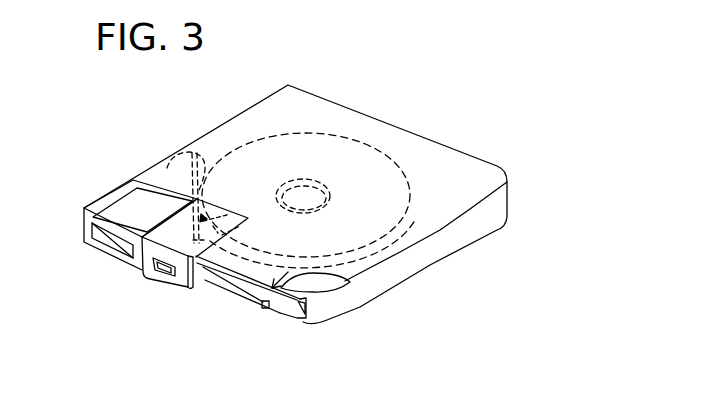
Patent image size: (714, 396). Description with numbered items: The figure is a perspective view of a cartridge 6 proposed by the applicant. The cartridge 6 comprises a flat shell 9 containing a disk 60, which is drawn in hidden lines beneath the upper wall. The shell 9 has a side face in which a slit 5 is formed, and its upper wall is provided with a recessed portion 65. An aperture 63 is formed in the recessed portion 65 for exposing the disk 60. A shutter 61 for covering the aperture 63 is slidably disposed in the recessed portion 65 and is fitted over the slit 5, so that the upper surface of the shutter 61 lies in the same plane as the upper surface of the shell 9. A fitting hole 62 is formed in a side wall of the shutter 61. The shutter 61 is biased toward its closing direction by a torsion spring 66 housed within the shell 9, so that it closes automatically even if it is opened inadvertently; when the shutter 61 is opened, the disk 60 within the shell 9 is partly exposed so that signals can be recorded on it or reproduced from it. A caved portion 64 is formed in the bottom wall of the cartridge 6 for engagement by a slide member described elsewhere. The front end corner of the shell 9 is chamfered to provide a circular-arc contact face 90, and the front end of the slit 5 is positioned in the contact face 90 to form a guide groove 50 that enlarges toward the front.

The cartridge 6 is at (490, 123).
The slit 5 is at (295, 226).
The shell 9 is at (436, 156).
The contact face 90 is at (330, 310).
The disk 60 is at (360, 160).
The recessed portion 65 is at (132, 182).
The shutter 61 is at (180, 288).
The fitting hole 62 is at (170, 273).
The torsion spring 66 is at (190, 150).
The aperture 63 is at (206, 275).
The caved portion 64 is at (271, 310).
The guide groove 50 is at (299, 303).